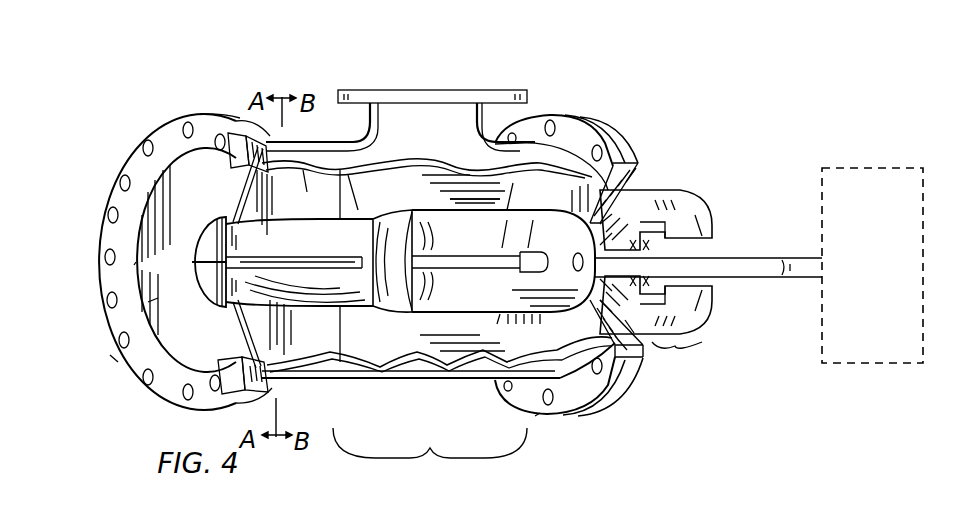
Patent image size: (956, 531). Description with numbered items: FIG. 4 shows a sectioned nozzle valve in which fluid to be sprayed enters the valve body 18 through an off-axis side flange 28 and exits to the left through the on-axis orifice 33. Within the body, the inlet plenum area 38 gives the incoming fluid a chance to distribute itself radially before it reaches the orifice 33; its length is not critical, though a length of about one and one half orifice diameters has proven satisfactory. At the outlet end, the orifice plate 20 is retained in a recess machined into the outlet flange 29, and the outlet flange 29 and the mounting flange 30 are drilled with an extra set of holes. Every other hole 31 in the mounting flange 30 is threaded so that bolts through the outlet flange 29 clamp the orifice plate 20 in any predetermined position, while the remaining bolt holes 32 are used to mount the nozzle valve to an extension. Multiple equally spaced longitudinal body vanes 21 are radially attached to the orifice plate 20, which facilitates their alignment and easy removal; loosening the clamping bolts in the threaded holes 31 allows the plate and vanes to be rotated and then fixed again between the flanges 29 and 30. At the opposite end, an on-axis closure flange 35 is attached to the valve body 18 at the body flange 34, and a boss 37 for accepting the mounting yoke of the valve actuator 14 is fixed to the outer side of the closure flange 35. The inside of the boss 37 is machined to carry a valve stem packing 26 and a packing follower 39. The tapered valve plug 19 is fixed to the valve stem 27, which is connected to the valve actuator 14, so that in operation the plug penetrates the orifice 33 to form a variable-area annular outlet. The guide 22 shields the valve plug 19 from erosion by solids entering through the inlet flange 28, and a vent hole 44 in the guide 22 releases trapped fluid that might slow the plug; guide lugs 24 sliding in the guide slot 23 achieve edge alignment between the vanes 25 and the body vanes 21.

The valve actuator 14 is at (876, 164).
The valve body 18 is at (430, 385).
The valve plug 19 is at (337, 130).
The orifice plate 20 is at (98, 320).
The body vanes 21 is at (298, 137).
The guide 22 is at (398, 322).
The guide slot 23 is at (535, 108).
The guide lug 24 is at (558, 102).
The vanes 25 is at (312, 387).
The valve stem packing 26 is at (676, 352).
The valve stem 27 is at (758, 283).
The side flange 28 is at (418, 85).
The outlet flange 29 is at (238, 112).
The mounting flange 30 is at (126, 143).
The threaded holes 31 is at (100, 222).
The bolt holes 32 is at (98, 290).
The orifice 33 is at (115, 365).
The body flange 34 is at (545, 418).
The closure flange 35 is at (595, 112).
The boss 37 is at (652, 185).
The inlet plenum area 38 is at (430, 452).
The packing follower 39 is at (708, 310).
The vent hole 44 is at (627, 132).